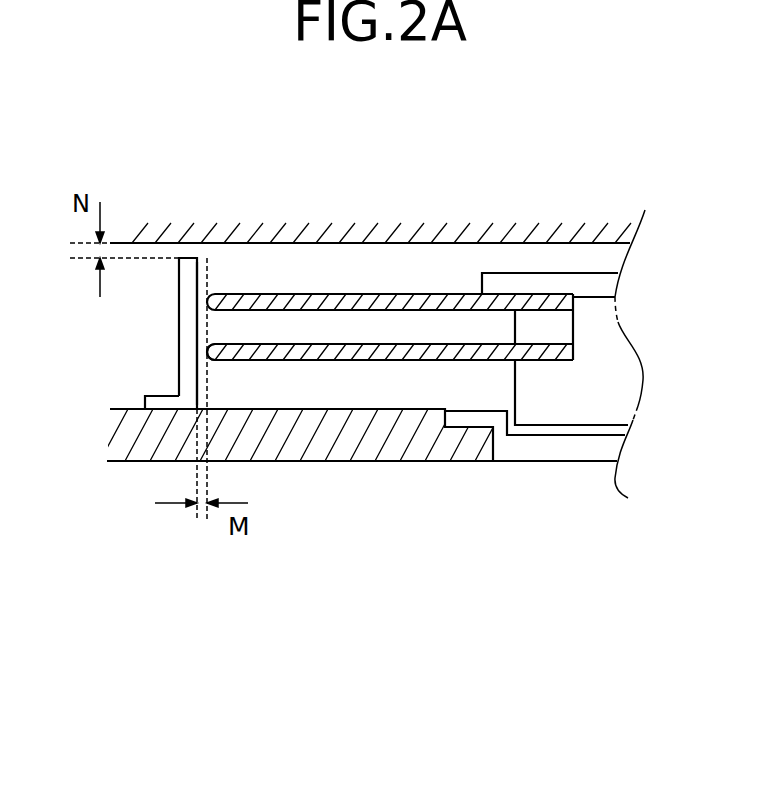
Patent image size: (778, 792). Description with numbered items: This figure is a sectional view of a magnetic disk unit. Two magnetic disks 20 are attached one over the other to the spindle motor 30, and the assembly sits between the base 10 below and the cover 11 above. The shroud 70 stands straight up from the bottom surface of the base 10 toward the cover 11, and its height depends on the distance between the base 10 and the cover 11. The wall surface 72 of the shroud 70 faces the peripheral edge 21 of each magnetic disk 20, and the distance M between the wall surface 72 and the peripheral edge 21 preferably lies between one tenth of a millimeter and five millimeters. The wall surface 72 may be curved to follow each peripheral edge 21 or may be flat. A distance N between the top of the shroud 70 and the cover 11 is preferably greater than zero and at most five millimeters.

The base 10 is at (330, 444).
The cover 11 is at (342, 226).
The magnetic disk 20 is at (420, 293).
The peripheral edge 21 is at (204, 346).
The spindle motor 30 is at (580, 408).
The shroud 70 is at (179, 312).
The wall surface 72 is at (197, 275).